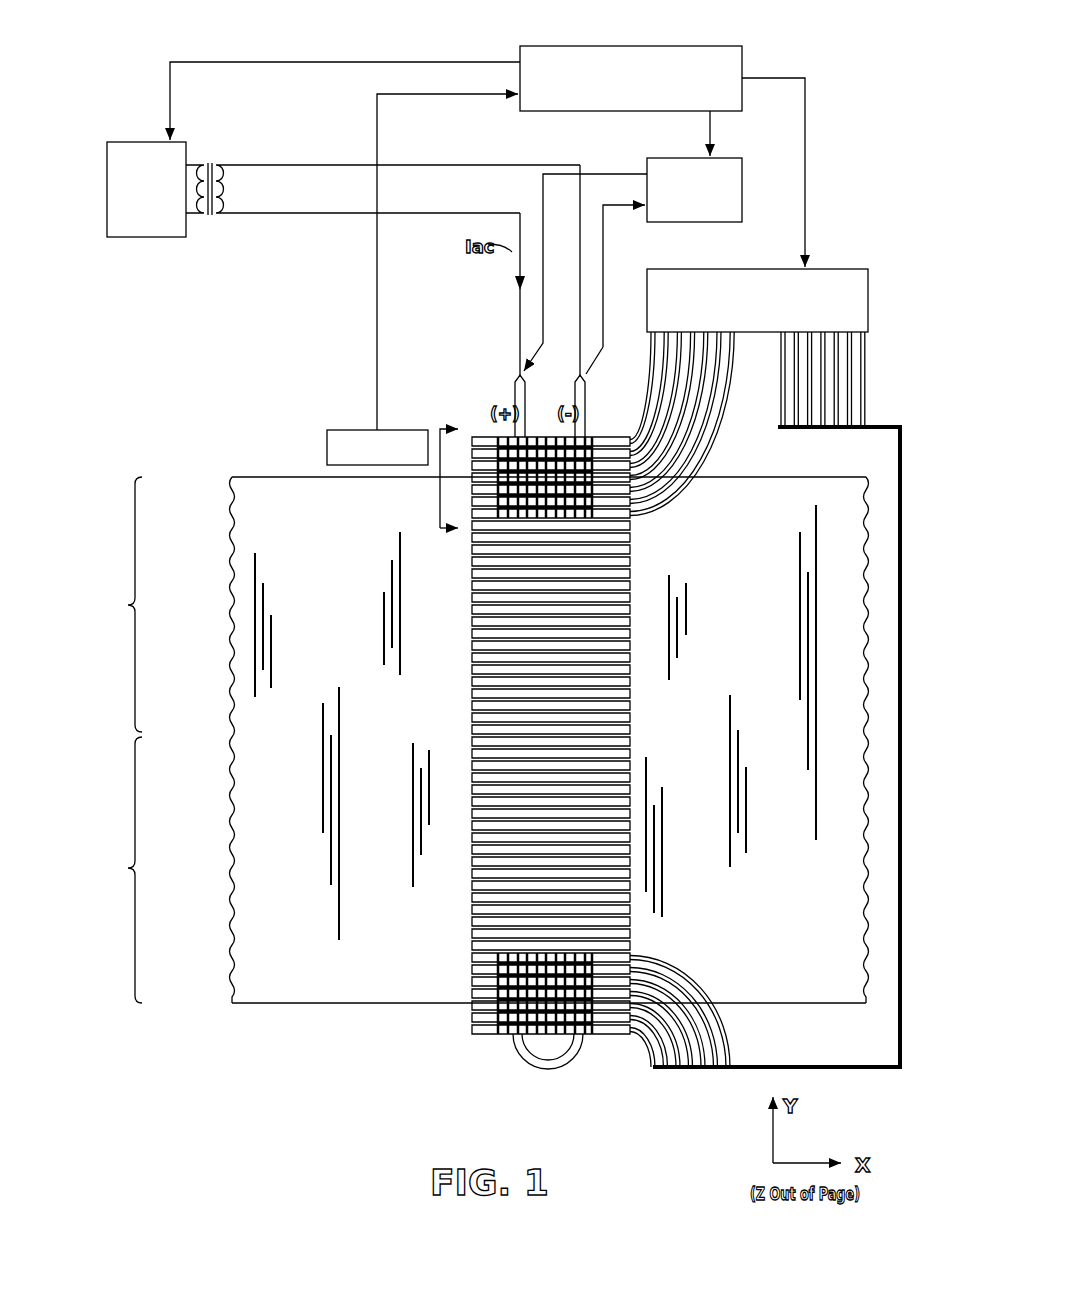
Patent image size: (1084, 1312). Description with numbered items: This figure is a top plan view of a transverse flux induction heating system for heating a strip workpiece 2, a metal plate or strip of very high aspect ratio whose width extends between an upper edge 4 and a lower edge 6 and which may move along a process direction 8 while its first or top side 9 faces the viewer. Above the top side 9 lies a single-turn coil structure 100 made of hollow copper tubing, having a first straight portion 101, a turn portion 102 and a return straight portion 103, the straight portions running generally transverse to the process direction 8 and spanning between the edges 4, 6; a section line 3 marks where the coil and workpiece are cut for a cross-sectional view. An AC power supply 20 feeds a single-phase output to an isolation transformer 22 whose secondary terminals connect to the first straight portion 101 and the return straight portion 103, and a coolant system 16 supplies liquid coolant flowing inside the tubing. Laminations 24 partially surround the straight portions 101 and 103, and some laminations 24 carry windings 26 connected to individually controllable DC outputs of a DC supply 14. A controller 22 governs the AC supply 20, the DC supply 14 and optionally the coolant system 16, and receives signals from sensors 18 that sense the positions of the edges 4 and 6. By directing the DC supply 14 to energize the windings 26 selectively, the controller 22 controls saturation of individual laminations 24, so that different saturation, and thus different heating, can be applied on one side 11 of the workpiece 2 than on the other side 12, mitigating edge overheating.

The workpiece 2 is at (248, 476).
The section line 3 is at (472, 973).
The upper edge 4 is at (312, 468).
The lower edge 6 is at (258, 1010).
The process direction 8 is at (190, 740).
The first side 9 is at (272, 498).
The one side of the workpiece 11 is at (128, 605).
The other side of the workpiece 12 is at (128, 870).
The DC supply 14 is at (752, 269).
The coolant system 16 is at (676, 158).
The sensors 18 is at (360, 430).
The AC power supply 20 is at (135, 142).
The controller 22 is at (628, 46).
The laminations 24 is at (472, 463).
The windings 26 is at (878, 381).
The coil structure 100 is at (484, 360).
The first straight portion 101 is at (515, 380).
The turn portion 102 is at (546, 1070).
The return straight portion 103 is at (586, 380).